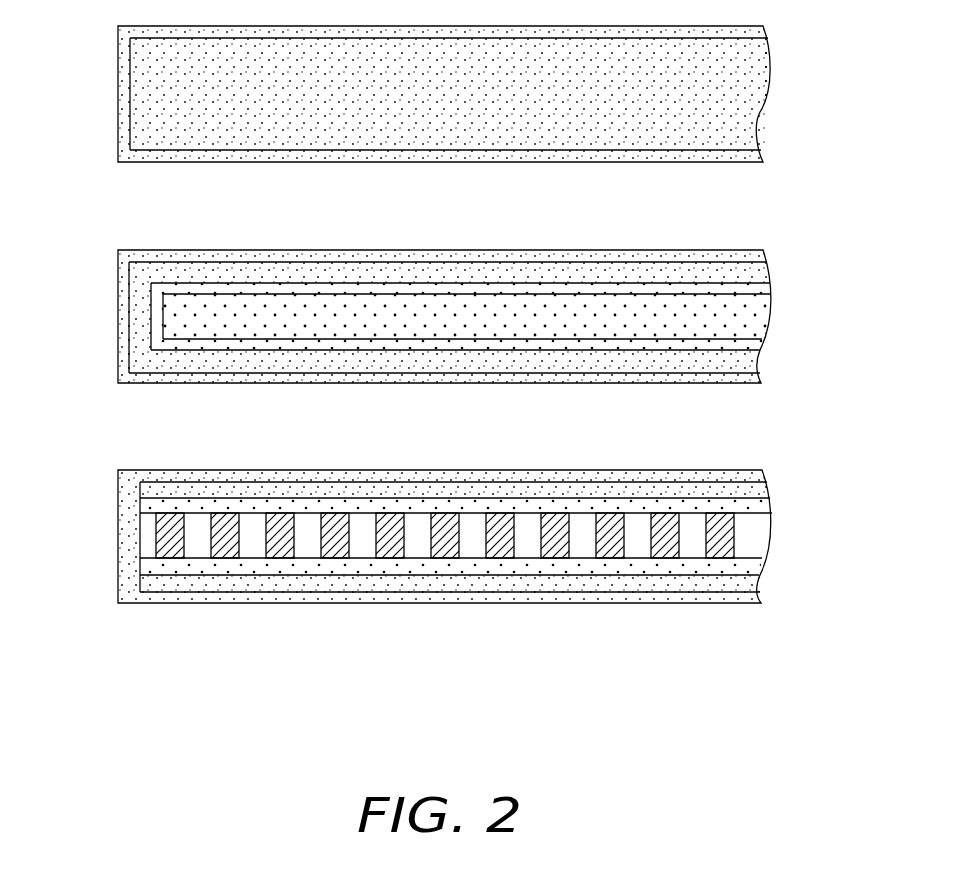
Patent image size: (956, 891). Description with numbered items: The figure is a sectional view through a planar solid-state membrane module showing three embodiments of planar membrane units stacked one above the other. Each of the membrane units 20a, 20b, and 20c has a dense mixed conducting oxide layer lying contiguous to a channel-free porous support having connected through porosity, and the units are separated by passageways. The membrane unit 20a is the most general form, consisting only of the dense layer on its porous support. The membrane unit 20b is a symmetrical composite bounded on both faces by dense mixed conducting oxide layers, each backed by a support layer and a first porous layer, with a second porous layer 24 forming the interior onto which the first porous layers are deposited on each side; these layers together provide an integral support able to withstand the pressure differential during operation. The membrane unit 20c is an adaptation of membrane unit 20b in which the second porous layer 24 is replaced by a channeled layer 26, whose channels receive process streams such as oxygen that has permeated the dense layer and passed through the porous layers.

The membrane unit 20a is at (123, 80).
The membrane unit 20b is at (123, 302).
The membrane unit 20c is at (123, 549).
The second porous layer 24 is at (752, 316).
The channeled layer 26 is at (720, 540).